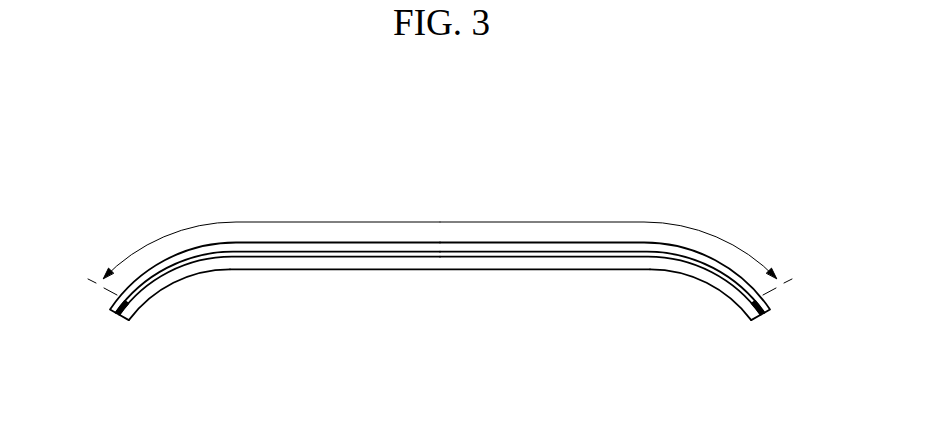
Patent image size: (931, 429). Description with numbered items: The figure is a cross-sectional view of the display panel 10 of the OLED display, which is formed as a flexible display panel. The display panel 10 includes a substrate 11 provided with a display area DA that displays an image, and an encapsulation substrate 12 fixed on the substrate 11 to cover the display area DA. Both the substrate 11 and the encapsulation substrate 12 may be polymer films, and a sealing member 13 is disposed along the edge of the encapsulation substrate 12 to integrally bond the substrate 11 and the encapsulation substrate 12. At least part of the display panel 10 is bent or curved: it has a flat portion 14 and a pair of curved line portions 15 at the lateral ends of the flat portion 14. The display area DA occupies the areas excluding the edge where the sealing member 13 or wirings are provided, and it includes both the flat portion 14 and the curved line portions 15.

The display panel 10 is at (425, 322).
The substrate 11 is at (134, 321).
The encapsulation substrate 12 is at (111, 312).
The sealing member 13 is at (121, 321).
The flat portion 14 is at (438, 270).
The curved line portions 15 is at (177, 276).
The display area DA is at (440, 241).